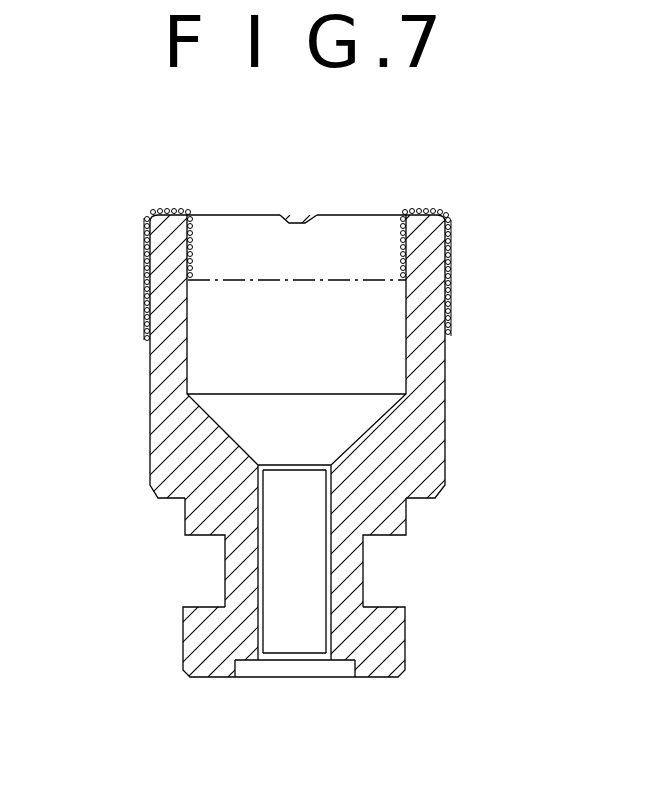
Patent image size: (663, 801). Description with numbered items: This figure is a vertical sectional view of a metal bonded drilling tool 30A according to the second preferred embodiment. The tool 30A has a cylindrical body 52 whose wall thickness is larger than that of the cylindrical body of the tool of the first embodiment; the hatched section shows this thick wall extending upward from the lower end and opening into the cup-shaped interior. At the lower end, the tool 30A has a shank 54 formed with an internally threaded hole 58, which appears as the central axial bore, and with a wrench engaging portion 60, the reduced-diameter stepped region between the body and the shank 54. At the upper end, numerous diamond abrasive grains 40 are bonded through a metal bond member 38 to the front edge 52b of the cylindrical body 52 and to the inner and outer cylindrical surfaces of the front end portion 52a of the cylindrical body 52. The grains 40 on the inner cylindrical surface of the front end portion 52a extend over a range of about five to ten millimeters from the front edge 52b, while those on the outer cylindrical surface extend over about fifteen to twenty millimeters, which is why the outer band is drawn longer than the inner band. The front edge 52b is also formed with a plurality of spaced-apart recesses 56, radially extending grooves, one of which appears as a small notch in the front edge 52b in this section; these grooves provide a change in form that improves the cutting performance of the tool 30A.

The metal bonded drilling tool 30A is at (450, 400).
The metal bond member 38 is at (147, 256).
The diamond abrasive grains 40 is at (152, 211).
The cylindrical body 52 is at (155, 368).
The front end portion 52a is at (452, 220).
The front edge 52b is at (358, 215).
The shank 54 is at (401, 640).
The recesses 56 is at (296, 221).
The internally threaded hole 58 is at (267, 625).
The wrench engaging portion 60 is at (225, 572).